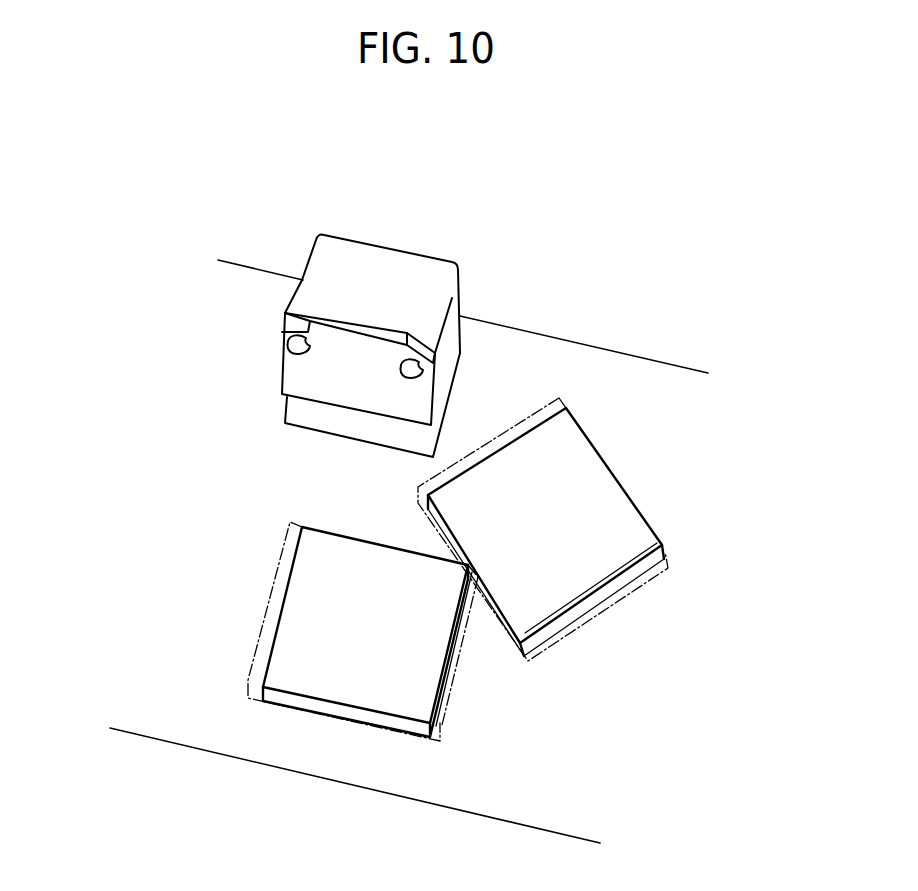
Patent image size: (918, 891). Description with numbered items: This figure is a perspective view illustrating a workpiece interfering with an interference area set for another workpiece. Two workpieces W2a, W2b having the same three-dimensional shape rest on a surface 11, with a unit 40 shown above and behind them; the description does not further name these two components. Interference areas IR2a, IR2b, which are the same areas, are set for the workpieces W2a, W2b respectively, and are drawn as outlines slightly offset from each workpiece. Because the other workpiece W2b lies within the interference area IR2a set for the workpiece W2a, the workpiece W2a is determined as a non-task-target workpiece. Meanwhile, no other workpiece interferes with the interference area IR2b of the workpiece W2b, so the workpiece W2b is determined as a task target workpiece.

The stage / table 11 is at (623, 383).
The irradiation head / processing unit 40 is at (405, 252).
The workpiece W2b is at (606, 458).
The interference area IR2b is at (530, 413).
The workpiece W2a is at (337, 721).
The interference area IR2a is at (450, 716).